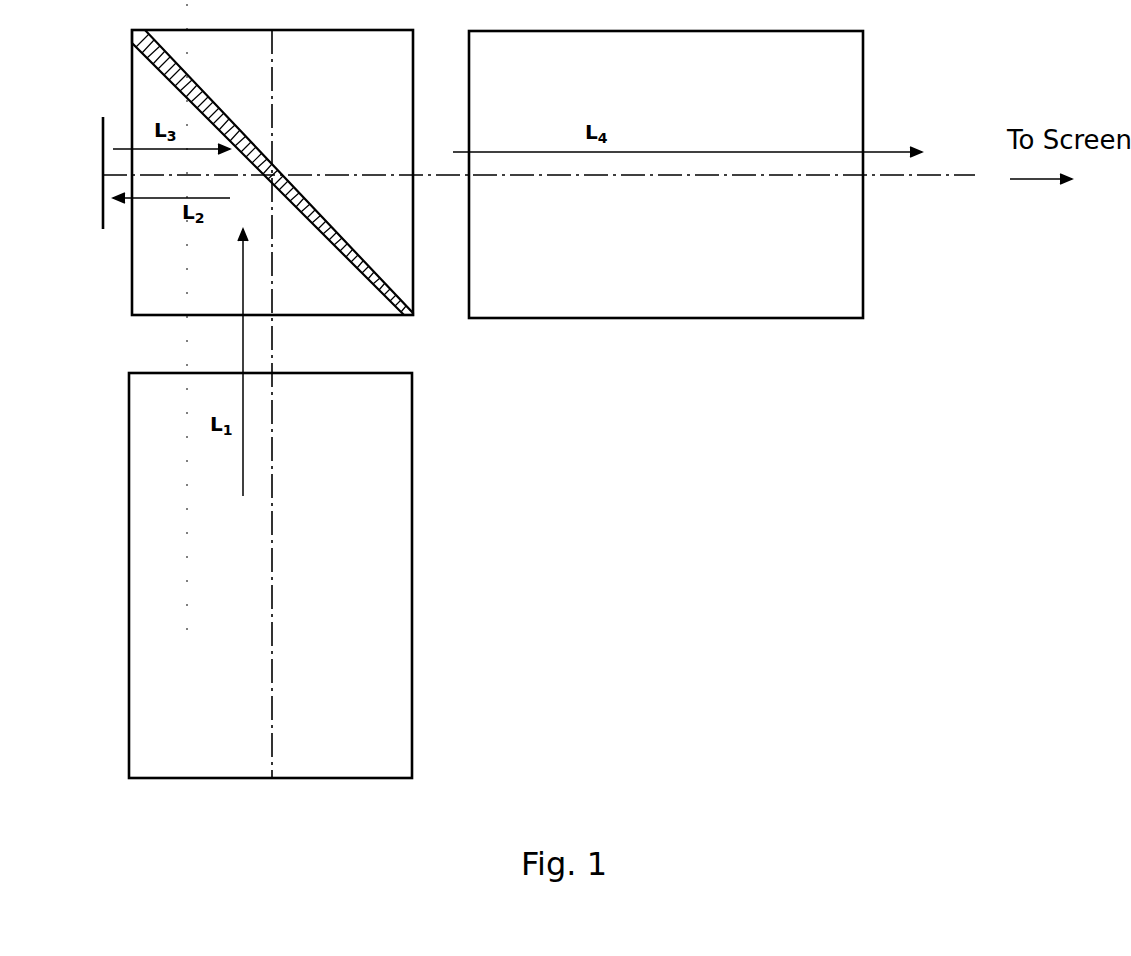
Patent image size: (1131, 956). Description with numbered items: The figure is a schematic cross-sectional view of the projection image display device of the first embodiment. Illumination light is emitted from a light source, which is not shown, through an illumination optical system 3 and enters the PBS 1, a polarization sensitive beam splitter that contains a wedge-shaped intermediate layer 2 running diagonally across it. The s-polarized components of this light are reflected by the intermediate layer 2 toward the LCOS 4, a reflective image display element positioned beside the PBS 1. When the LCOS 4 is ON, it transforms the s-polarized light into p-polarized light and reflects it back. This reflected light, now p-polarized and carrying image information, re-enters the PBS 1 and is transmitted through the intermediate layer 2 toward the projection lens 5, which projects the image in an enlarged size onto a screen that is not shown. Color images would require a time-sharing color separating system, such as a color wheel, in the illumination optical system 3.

The PBS 1 is at (148, 282).
The wedge-shaped intermediate layer 2 is at (355, 262).
The illumination optical system 3 is at (411, 536).
The LCOS 4 is at (102, 212).
The projection lens 5 is at (657, 305).